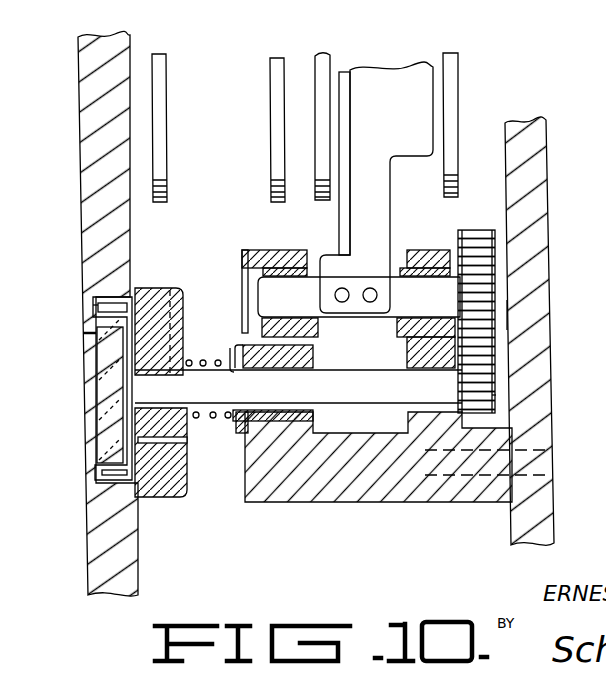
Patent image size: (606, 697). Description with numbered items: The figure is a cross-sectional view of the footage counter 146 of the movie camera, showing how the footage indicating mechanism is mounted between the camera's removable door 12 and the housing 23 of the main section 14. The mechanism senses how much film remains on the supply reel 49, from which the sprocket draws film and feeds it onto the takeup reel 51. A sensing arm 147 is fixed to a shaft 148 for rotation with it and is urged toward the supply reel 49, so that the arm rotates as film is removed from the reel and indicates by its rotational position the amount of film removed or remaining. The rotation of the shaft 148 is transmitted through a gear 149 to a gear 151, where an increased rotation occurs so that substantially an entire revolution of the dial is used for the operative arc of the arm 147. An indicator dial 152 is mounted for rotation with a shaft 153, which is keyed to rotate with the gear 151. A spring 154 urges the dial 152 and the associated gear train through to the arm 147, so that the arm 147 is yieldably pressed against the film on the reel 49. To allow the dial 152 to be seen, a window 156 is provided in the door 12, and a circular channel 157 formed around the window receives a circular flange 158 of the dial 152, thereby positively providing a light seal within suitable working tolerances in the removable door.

The door 12 is at (80, 236).
The main section 14 is at (548, 302).
The housing 23 is at (540, 172).
The supply reel 49 is at (456, 103).
The takeup reel 51 is at (168, 150).
The footage counter 146 is at (260, 240).
The sensing arm 147 is at (379, 68).
The shaft 148 is at (246, 297).
The gear 149 is at (467, 230).
The gear 151 is at (493, 394).
The indicator dial 152 is at (151, 289).
The shaft 153 is at (330, 372).
The spring 154 is at (207, 356).
The window 156 is at (84, 382).
The circular channel 157 is at (83, 308).
The circular flange 158 is at (112, 303).